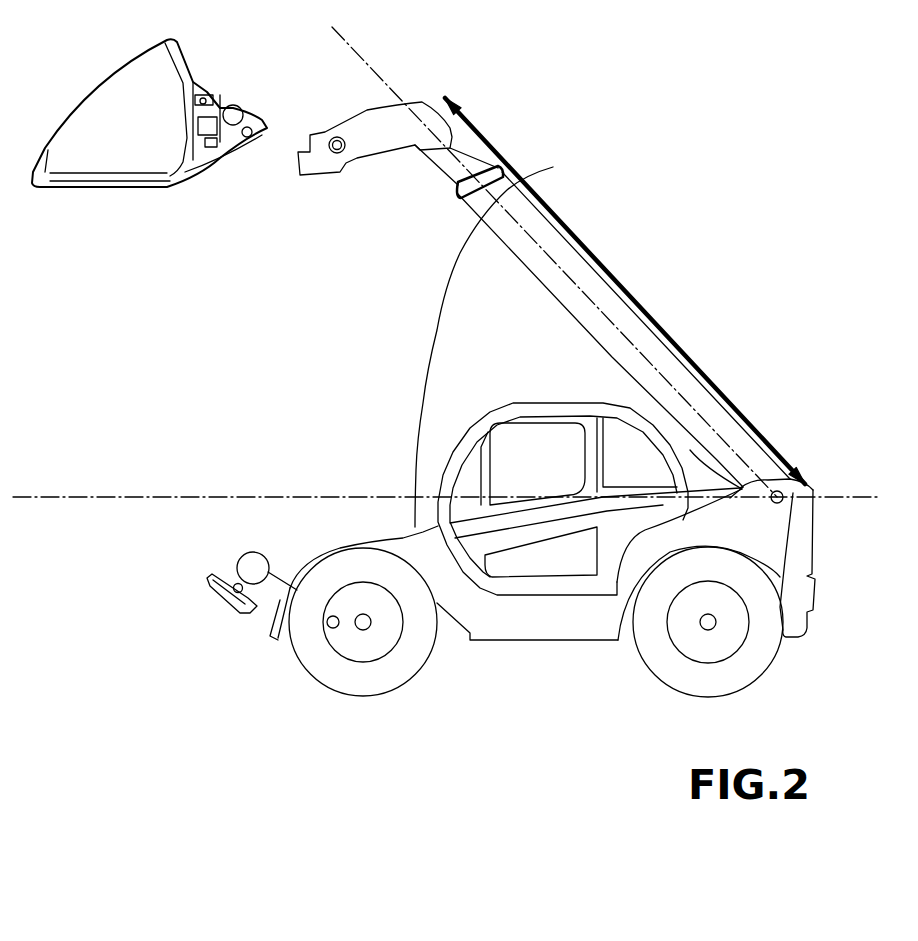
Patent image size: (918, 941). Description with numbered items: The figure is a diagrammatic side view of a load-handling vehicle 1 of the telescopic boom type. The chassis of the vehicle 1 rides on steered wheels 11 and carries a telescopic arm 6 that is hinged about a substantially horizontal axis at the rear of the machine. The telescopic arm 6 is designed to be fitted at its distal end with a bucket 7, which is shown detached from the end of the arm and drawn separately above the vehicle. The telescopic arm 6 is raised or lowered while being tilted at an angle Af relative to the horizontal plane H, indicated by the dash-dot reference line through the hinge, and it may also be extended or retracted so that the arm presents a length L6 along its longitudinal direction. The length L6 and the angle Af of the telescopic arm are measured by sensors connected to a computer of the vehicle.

The bucket 7 is at (93, 97).
The telescopic arm 6 is at (633, 267).
The length of the telescopic arm L6 is at (565, 222).
The wheeled vehicle 1 is at (753, 385).
The steered wheels 11 is at (322, 672).
The horizontal plane H is at (82, 498).
The tilt angle of the telescopic arm Af is at (423, 402).